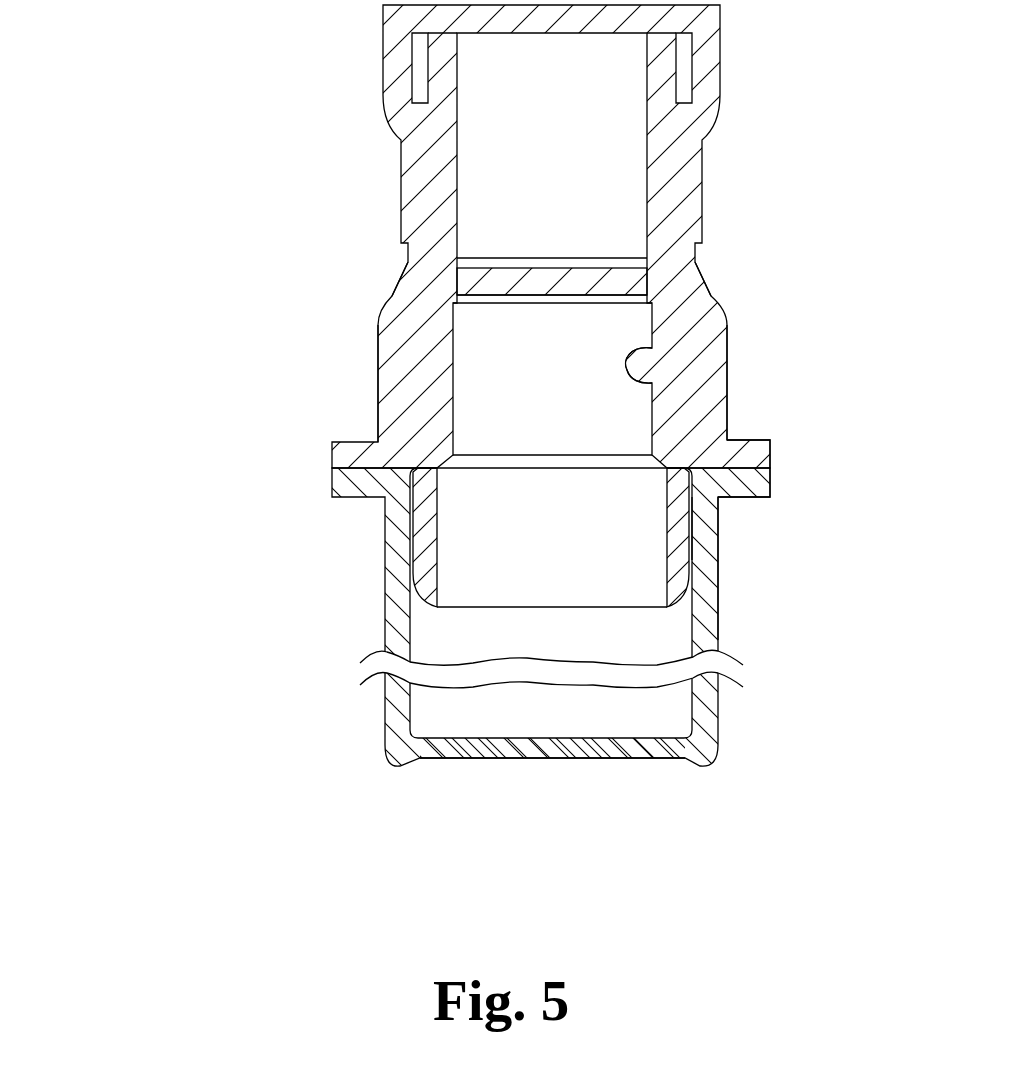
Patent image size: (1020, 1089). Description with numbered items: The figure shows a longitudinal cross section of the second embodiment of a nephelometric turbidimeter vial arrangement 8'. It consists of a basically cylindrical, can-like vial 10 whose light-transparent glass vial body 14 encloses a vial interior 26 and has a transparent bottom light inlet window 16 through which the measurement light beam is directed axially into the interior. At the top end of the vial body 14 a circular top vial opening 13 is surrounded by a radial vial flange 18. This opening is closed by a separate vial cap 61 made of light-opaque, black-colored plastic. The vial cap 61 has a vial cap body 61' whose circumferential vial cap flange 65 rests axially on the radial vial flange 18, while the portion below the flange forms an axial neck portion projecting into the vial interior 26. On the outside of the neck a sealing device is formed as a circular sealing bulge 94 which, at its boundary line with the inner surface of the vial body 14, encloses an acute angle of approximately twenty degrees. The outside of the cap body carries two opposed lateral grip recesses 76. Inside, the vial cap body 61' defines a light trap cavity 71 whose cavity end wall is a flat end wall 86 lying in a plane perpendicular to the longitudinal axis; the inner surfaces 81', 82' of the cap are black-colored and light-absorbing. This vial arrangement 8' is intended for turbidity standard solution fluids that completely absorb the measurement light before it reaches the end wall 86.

The vial arrangement 8' is at (75, 106).
The vial cap 61 is at (482, 236).
The vial cap body 61' is at (501, 370).
The lateral grip recesses 76 is at (372, 262).
The flat end wall 86 is at (550, 280).
The inner surface 81' is at (661, 310).
The inner surface 82' is at (761, 354).
The top vial opening 13 is at (667, 457).
The vial cap flange 65 is at (768, 441).
The vial 10 is at (268, 775).
The radial vial flange 18 is at (772, 486).
The vial interior 26 is at (598, 621).
The light trap cavity 71 is at (518, 582).
The circular sealing bulge 94 is at (687, 585).
The vial body 14 is at (695, 620).
The bottom light inlet window 16 is at (584, 793).